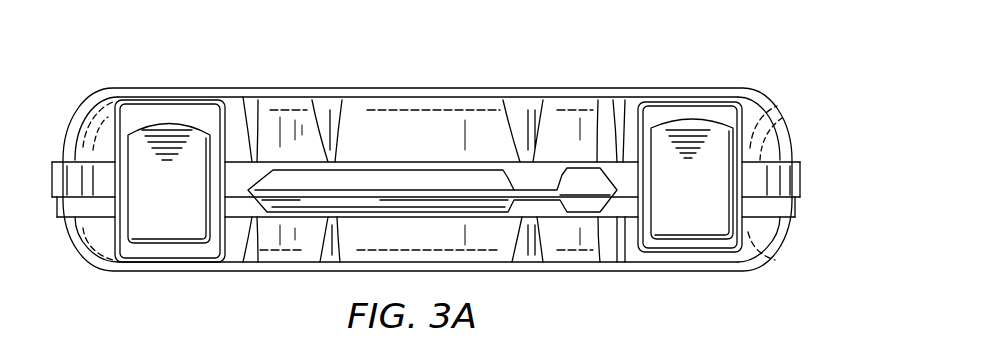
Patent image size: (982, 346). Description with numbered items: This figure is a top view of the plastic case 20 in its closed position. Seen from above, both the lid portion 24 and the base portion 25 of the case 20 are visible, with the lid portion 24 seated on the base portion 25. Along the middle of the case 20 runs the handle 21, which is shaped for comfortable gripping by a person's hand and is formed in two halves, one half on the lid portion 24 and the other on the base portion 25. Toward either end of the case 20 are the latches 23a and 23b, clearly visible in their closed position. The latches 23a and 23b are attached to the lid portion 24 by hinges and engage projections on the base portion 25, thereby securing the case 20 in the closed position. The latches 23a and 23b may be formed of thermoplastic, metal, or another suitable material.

The case 20 is at (710, 312).
The handle 21 is at (423, 180).
The latch 23a is at (155, 183).
The latch 23b is at (708, 168).
The lid portion 24 is at (755, 138).
The base portion 25 is at (763, 243).